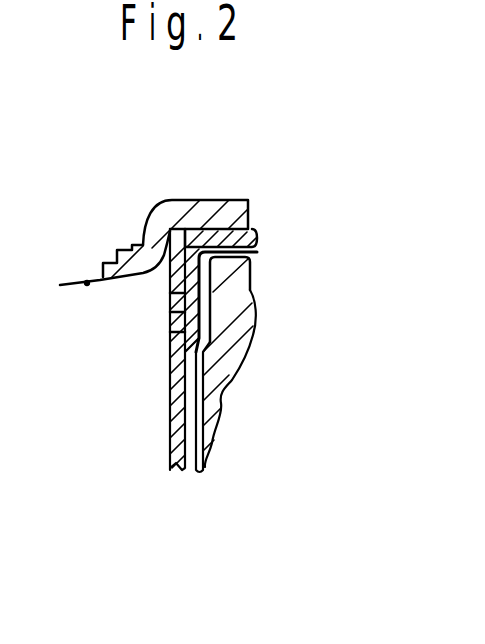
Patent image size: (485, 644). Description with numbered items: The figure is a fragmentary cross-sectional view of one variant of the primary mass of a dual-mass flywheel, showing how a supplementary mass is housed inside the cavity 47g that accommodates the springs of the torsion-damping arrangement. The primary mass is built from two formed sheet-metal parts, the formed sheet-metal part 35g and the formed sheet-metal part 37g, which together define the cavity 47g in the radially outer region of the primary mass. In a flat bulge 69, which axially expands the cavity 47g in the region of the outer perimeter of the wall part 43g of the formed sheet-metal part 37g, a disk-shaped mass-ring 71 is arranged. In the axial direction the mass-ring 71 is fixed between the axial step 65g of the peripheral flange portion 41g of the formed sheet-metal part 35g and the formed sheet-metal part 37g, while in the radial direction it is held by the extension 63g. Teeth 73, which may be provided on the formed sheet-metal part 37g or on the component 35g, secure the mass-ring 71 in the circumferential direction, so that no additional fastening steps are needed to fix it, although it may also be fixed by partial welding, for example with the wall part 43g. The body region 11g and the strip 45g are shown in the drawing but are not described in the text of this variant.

The housing body 11g is at (228, 372).
The formed sheet-metal part 35g is at (87, 283).
The formed sheet-metal part 37g is at (169, 445).
The peripheral flange portion 41g is at (112, 263).
The wall part 43g is at (170, 412).
The flange strip 45g is at (257, 240).
The cavity 47g is at (170, 316).
The extension 63g is at (202, 208).
The axial step 65g is at (157, 245).
The flat bulge 69 is at (201, 296).
The mass-ring 71 is at (172, 294).
The teeth 73 is at (170, 334).